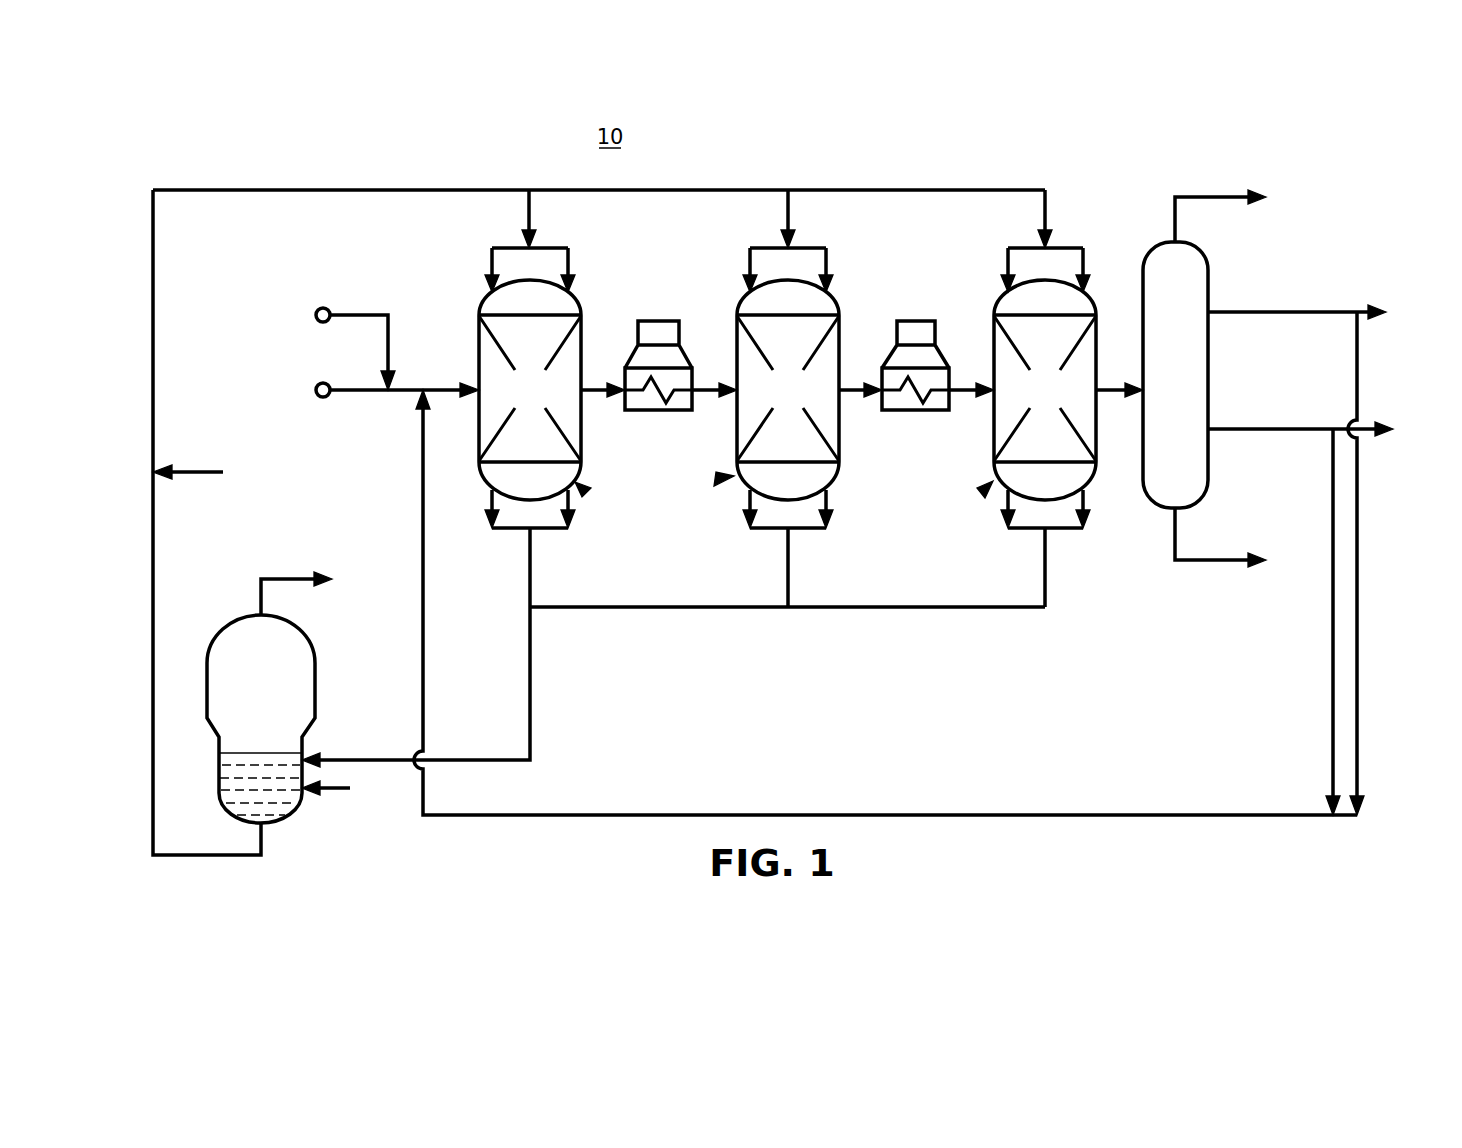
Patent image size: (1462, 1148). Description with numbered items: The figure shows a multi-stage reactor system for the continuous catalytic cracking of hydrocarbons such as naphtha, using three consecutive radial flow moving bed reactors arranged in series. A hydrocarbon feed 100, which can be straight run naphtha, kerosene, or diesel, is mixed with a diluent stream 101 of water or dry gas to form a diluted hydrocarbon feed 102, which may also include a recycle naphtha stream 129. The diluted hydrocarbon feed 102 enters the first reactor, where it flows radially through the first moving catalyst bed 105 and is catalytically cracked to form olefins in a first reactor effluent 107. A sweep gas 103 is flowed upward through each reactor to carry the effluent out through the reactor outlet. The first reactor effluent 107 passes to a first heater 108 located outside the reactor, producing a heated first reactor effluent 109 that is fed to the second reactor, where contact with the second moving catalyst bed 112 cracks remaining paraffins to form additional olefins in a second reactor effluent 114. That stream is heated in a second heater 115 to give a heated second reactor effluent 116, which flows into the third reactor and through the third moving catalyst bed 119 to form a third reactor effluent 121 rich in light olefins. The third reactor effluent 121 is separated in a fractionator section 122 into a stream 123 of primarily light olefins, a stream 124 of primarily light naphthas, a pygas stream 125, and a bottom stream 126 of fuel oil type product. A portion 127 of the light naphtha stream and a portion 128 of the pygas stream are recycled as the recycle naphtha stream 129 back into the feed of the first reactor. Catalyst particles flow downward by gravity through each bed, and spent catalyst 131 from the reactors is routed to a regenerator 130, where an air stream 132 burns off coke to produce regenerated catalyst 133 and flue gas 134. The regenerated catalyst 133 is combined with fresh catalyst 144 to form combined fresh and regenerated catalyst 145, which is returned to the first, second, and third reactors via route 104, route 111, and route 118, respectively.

The hydrocarbon feed 100 is at (345, 448).
The diluent stream 101 is at (350, 278).
The diluted hydrocarbon feed 102 is at (443, 386).
The sweep gas 103 is at (583, 491).
The route 104 is at (531, 200).
The first moving catalyst bed 105 is at (517, 351).
The first reactor effluent 107 is at (603, 386).
The first heater 108 is at (661, 321).
The heated first reactor effluent 109 is at (713, 386).
The route 111 is at (790, 200).
The second moving catalyst bed 112 is at (775, 351).
The second reactor effluent 114 is at (860, 386).
The second heater 115 is at (918, 321).
The heated second reactor effluent 116 is at (971, 386).
The route 118 is at (1047, 200).
The third moving catalyst bed 119 is at (1032, 351).
The third reactor effluent 121 is at (1120, 386).
The fractionator section 122 is at (1162, 359).
The stream comprising primarily C2 to C4 olefins 123 is at (1376, 202).
The stream comprising primarily light naphthas 124 is at (1300, 312).
The pygas stream 125 is at (1245, 429).
The bottom stream 126 is at (1213, 560).
The portion of light naphtha stream 127 is at (1357, 366).
The portion of pygas stream 128 is at (1333, 672).
The recycle naphtha stream 129 is at (860, 817).
The regenerator 130 is at (315, 655).
The spent catalyst 131 is at (530, 705).
The air stream 132 is at (366, 802).
The regenerated catalyst 133 is at (153, 772).
The flue gas 134 is at (283, 579).
The fresh catalyst 144 is at (197, 472).
The combined fresh and regenerated catalyst 145 is at (232, 190).